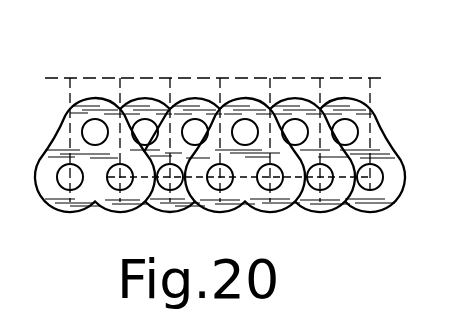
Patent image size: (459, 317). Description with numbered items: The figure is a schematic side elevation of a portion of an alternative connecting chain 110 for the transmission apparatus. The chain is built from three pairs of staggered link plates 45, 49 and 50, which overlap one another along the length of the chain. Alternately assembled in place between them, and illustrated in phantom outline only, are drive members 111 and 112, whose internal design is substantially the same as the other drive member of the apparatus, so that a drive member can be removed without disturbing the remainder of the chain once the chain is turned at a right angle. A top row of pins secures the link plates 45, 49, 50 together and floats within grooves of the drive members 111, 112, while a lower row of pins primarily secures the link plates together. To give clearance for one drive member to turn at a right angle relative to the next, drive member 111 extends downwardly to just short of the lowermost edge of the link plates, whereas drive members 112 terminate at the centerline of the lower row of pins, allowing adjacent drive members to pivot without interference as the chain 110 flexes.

The connecting chain 110 is at (388, 59).
The drive member 111 is at (93, 78).
The drive member 112 is at (145, 78).
The link plate 50 is at (197, 97).
The link plate 45 is at (52, 209).
The link plate 49 is at (170, 212).